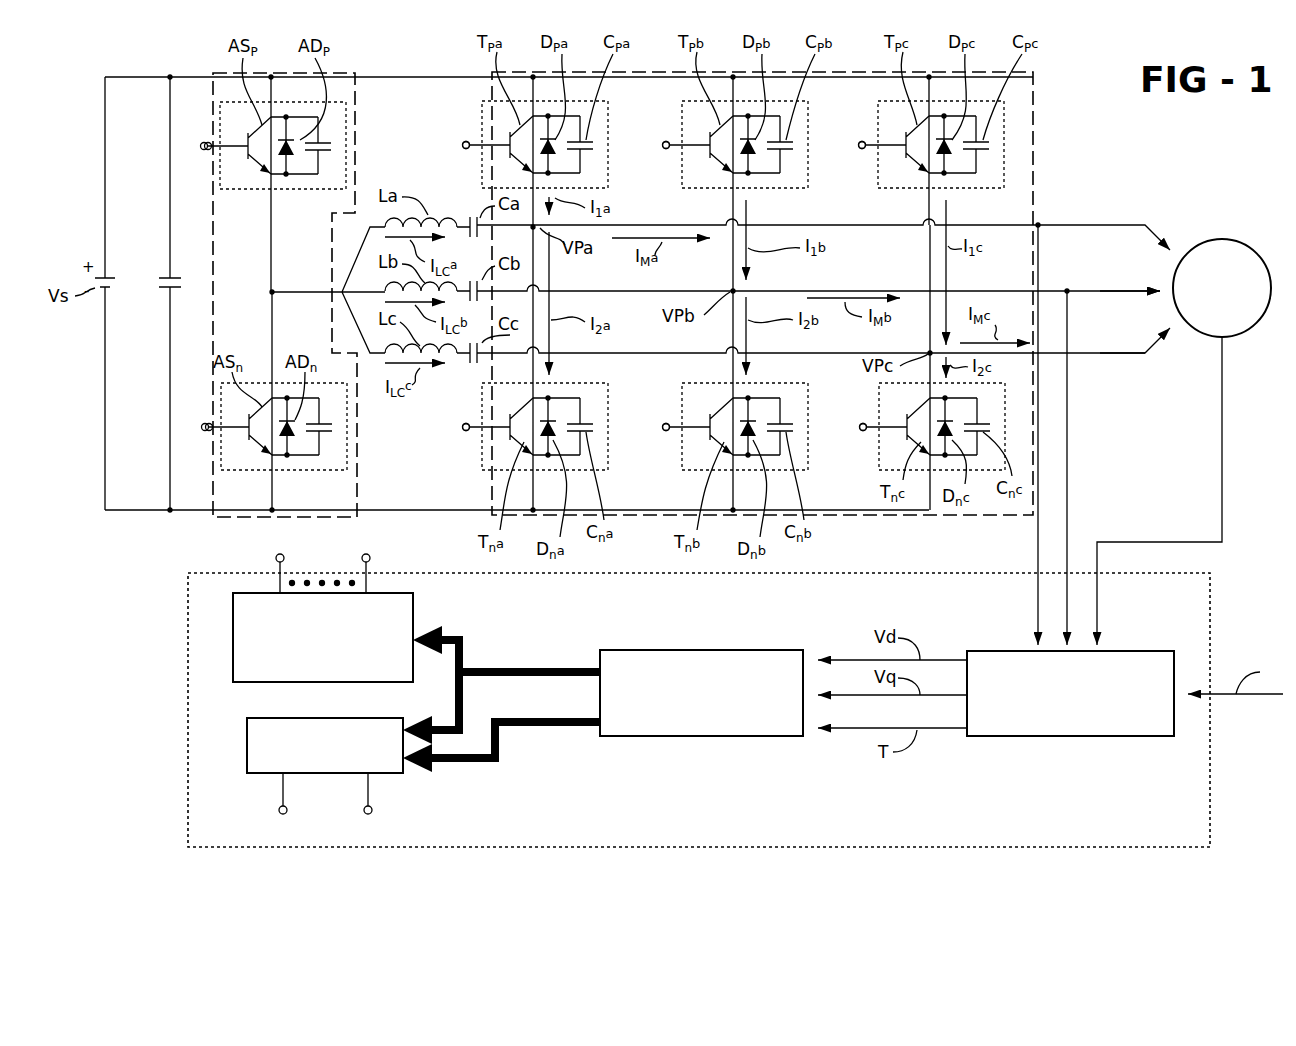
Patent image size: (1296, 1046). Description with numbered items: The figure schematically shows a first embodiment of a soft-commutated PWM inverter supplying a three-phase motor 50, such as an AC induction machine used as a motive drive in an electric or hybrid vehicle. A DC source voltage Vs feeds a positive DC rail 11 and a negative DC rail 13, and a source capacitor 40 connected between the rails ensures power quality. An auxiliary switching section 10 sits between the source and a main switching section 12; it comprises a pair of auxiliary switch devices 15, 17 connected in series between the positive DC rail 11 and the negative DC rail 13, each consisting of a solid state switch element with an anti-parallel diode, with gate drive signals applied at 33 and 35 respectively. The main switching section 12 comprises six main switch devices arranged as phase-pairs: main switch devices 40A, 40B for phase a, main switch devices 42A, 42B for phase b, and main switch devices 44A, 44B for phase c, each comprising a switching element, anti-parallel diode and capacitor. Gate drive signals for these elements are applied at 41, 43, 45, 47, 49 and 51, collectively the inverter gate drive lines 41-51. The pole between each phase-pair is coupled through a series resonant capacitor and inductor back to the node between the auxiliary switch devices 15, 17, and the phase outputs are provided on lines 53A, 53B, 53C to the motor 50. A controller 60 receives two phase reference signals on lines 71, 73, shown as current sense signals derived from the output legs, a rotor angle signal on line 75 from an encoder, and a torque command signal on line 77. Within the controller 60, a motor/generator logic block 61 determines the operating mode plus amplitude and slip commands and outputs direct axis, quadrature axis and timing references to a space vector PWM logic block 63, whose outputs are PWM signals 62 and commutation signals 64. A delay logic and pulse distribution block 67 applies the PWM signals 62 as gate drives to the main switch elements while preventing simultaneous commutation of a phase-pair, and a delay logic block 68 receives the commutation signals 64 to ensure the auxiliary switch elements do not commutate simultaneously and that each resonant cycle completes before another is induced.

The auxiliary switching section 10 is at (352, 70).
The positive DC rail 11 is at (138, 77).
The main switching section 12 is at (1037, 146).
The negative DC rail 13 is at (135, 512).
The auxiliary switch device 15 is at (258, 192).
The auxiliary switch device 17 is at (252, 468).
The gate of auxiliary switch device 33 is at (205, 143).
The gate of auxiliary switch device 35 is at (206, 424).
The source capacitor 40 is at (158, 282).
The main switch device 40A is at (483, 172).
The main switch device 40B is at (483, 460).
The gate drive signal input 41 is at (462, 145).
The main switch device 42A is at (700, 190).
The main switch device 42B is at (682, 455).
The gate drive signal input 43 is at (662, 145).
The main switch device 44A is at (895, 190).
The main switch device 44B is at (880, 455).
The gate drive signal input 45 is at (858, 145).
The gate drive signal input 47 is at (462, 427).
The gate drive signal input 49 is at (662, 425).
The gate drive signal input 51 is at (858, 425).
The inverter gate drive signal lines 41-51 is at (378, 550).
The three-phase motor 50 is at (1245, 240).
The phase output line 53A is at (1118, 225).
The phase output line 53B is at (1115, 290).
The phase output line 53C is at (1133, 354).
The controller 60 is at (1210, 807).
The motor/generator logic block 61 is at (1091, 738).
The PWM signals 62 is at (518, 668).
The space vector PWM logic 63 is at (742, 738).
The commutation signals 64 is at (528, 728).
The delay logic and pulse distribution block 67 is at (413, 608).
The delay logic block 68 is at (247, 746).
The phase reference signal line 71 is at (1068, 490).
The phase reference signal line 73 is at (1038, 540).
The rotor angle signal line 75 is at (1222, 412).
The torque command signal line 77 is at (1263, 698).